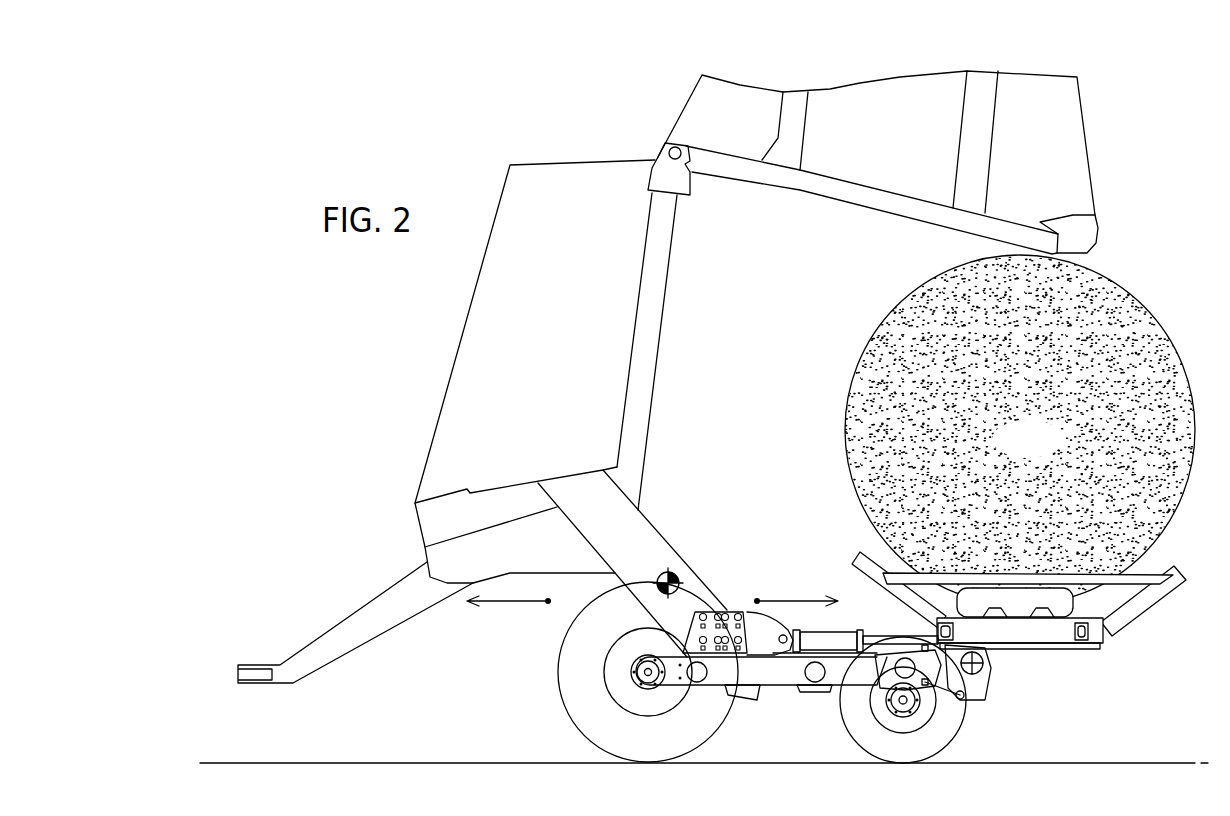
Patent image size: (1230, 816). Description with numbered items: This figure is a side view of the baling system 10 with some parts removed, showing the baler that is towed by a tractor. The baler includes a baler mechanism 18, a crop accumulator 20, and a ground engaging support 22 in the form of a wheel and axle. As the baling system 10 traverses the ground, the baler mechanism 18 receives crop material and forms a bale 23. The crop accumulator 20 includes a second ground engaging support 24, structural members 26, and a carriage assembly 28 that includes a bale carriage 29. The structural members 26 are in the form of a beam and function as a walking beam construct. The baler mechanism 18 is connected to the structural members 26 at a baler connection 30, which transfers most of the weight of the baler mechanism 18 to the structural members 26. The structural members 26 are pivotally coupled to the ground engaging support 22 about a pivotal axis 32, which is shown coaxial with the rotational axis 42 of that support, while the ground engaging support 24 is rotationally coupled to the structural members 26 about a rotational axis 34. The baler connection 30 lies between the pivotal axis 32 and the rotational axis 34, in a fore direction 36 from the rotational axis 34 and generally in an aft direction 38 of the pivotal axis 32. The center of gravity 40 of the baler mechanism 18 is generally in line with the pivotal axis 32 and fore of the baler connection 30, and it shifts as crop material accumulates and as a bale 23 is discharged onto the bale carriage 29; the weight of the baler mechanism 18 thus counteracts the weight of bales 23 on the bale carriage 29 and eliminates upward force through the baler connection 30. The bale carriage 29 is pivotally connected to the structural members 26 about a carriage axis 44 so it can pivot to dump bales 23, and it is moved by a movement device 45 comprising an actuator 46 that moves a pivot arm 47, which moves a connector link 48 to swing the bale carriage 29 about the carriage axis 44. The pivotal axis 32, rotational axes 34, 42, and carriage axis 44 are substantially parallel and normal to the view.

The baling system 10 is at (551, 111).
The baler mechanism 18 is at (555, 327).
The crop accumulator 20 is at (801, 328).
The ground engaging support 22 is at (610, 720).
The bale 23 is at (1020, 430).
The ground engaging support 24 is at (935, 735).
The structural members 26 is at (750, 672).
The carriage assembly 28 is at (1110, 664).
The bale carriage 29 is at (1054, 637).
The baler connection 30 is at (805, 675).
The pivotal axis 32 is at (648, 674).
The rotational axis 34 is at (903, 702).
The fore direction 36 is at (524, 604).
The aft direction 38 is at (801, 601).
The center of gravity 40 is at (670, 571).
The rotational axis 42 is at (648, 672).
The carriage axis 44 is at (977, 670).
The movement device 45 is at (842, 690).
The actuator 46 is at (845, 642).
The pivot arm 47 is at (928, 690).
The connector link 48 is at (922, 678).